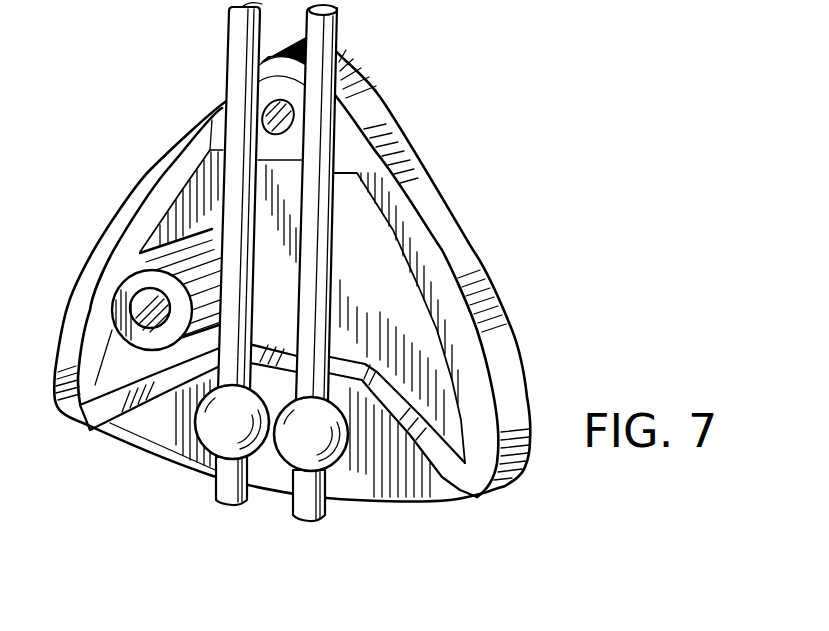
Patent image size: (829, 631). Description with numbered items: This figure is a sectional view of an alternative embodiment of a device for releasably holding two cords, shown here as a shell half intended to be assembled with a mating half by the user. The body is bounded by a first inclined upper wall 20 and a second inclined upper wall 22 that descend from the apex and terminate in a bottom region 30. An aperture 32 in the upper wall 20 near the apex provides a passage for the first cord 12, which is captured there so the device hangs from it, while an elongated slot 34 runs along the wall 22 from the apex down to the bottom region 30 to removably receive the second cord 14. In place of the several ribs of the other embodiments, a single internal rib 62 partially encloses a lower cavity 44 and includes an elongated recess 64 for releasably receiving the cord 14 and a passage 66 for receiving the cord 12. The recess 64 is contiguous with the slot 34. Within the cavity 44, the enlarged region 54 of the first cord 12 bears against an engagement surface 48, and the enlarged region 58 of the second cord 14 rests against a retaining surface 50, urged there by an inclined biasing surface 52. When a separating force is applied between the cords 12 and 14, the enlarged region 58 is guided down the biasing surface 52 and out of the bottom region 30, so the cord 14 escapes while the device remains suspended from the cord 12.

The first cord 12 is at (228, 37).
The second cord 14 is at (320, 40).
The first inclined upper wall 20 is at (150, 168).
The second inclined upper wall 22 is at (425, 200).
The bottom region 30 is at (455, 497).
The aperture 32 is at (228, 98).
The elongated slot 34 is at (455, 298).
The lower cavity 44 is at (165, 438).
The engagement surface 48 is at (187, 420).
The retaining surface 50 is at (367, 445).
The inclined biasing surface 52 is at (400, 443).
The enlarged region of first cord 54 is at (230, 433).
The enlarged region of second cord 58 is at (310, 443).
The internal rib 62 is at (430, 425).
The elongated recess 64 is at (442, 473).
The passage 66 is at (110, 423).